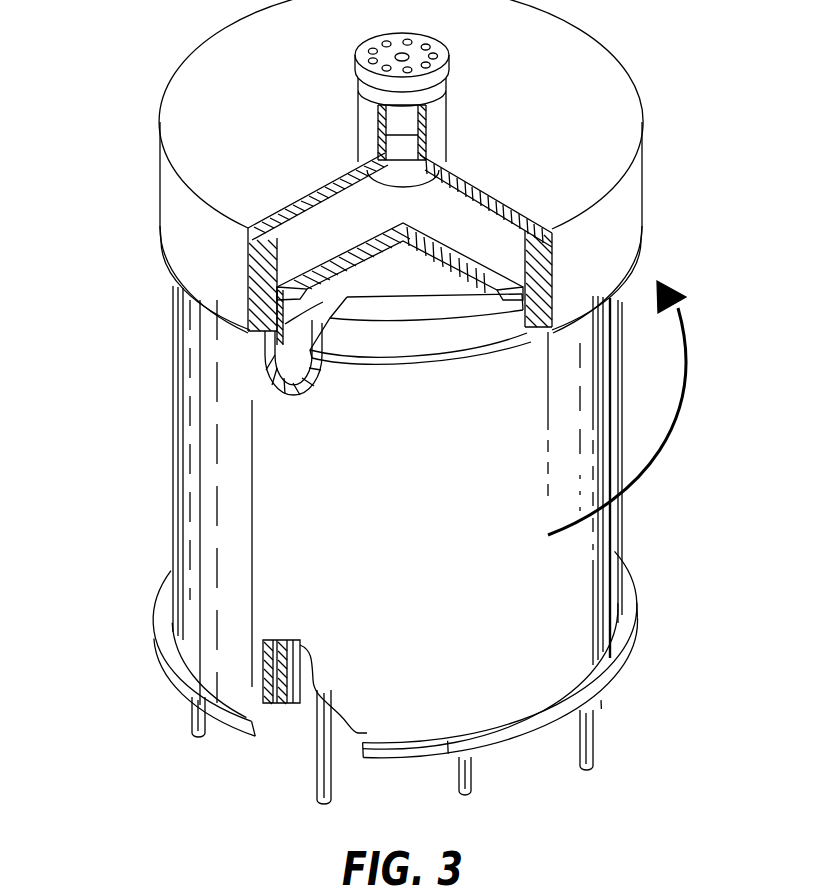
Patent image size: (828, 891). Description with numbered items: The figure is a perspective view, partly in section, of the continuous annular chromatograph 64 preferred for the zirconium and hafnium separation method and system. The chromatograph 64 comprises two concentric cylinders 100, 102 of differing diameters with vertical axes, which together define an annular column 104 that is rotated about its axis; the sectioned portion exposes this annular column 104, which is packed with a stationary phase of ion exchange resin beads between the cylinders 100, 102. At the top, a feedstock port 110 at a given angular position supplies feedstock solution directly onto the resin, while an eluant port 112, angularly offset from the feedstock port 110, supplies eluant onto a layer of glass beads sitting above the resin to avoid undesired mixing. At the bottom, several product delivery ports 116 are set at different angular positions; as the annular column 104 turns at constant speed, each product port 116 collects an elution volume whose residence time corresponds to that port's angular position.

The continuous annular chromatograph 64 is at (146, 385).
The concentric cylinder 100 is at (612, 371).
The concentric cylinder 102 is at (292, 322).
The annular column 104 is at (266, 343).
The feedstock port 110 is at (405, 38).
The eluant port 112 is at (437, 55).
The product delivery port 116 is at (200, 737).